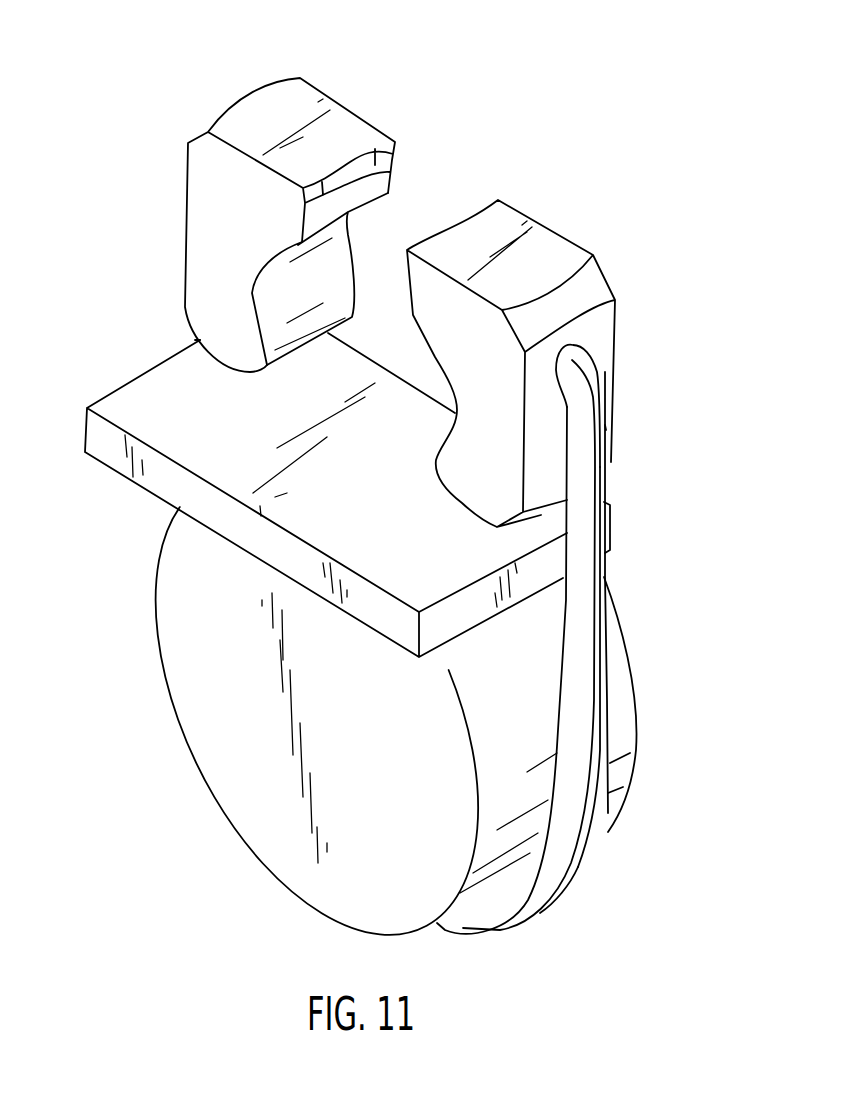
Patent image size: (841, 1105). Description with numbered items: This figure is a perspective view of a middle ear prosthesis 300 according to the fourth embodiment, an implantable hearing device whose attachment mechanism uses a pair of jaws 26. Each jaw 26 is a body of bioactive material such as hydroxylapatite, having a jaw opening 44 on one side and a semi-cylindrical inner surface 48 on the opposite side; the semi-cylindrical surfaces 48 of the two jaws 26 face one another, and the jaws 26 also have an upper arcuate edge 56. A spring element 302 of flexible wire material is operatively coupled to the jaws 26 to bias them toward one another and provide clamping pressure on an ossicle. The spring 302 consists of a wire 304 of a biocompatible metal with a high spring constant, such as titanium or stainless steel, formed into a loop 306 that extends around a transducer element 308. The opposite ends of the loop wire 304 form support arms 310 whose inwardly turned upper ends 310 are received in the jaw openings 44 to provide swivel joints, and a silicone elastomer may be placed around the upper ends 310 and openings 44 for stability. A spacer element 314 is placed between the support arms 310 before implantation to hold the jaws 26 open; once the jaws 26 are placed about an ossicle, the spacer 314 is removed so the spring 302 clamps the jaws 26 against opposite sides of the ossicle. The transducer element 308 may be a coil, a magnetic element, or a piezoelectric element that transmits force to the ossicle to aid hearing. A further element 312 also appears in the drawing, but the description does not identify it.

The jaw 26 is at (347, 123).
The jaw opening 44 is at (565, 392).
The semi-cylindrical inner surface 48 is at (322, 270).
The upper arcuate edge 56 is at (460, 232).
The middle ear prosthesis 300 is at (667, 203).
The spring element 302 is at (607, 489).
The wire 304 is at (604, 617).
The loop 306 is at (587, 870).
The transducer element 308 is at (230, 833).
The support arm 310 is at (195, 340).
The strap tab 312 is at (590, 373).
The spacer element 314 is at (108, 453).